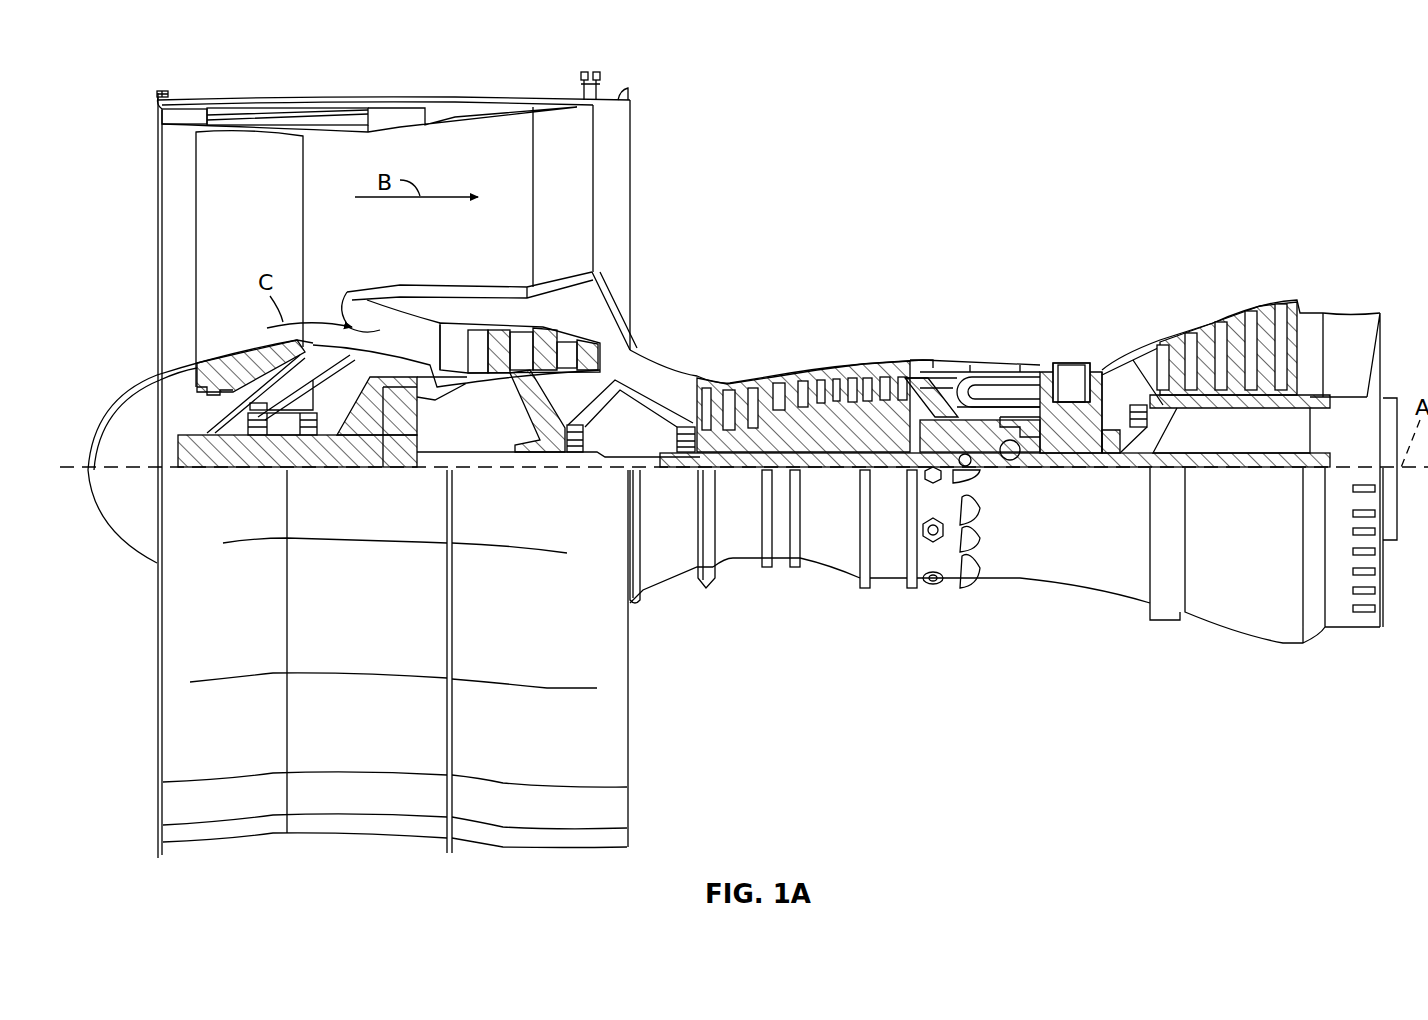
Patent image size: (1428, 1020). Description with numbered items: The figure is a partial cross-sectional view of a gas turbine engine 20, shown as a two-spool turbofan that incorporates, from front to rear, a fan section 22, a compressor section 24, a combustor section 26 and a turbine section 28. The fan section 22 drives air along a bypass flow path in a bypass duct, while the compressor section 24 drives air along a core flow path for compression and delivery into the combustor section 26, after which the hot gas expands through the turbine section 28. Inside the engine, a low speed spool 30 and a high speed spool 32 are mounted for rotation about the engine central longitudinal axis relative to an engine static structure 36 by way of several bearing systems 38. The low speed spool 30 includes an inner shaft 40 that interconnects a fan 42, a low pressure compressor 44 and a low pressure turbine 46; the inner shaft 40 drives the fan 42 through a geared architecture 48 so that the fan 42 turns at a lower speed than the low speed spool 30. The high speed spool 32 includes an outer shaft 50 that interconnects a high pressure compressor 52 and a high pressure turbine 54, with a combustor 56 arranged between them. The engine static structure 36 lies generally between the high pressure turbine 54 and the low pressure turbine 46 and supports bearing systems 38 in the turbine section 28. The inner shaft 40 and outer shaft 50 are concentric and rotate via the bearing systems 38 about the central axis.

The gas turbine engine 20 is at (1206, 137).
The fan section 22 is at (265, 94).
The compressor section 24 is at (824, 324).
The combustor section 26 is at (1020, 302).
The turbine section 28 is at (1137, 304).
The low speed spool 30 is at (850, 476).
The high speed spool 32 is at (903, 415).
The engine static structure 36 is at (893, 594).
The bearing systems 38 is at (262, 432).
The inner shaft 40 is at (643, 469).
The fan 42 is at (275, 229).
The low pressure compressor 44 is at (548, 345).
The low pressure turbine 46 is at (1237, 325).
The geared architecture 48 is at (395, 437).
The outer shaft 50 is at (992, 462).
The high pressure compressor 52 is at (810, 437).
The high pressure turbine 54 is at (1068, 363).
The combustor 56 is at (1010, 385).